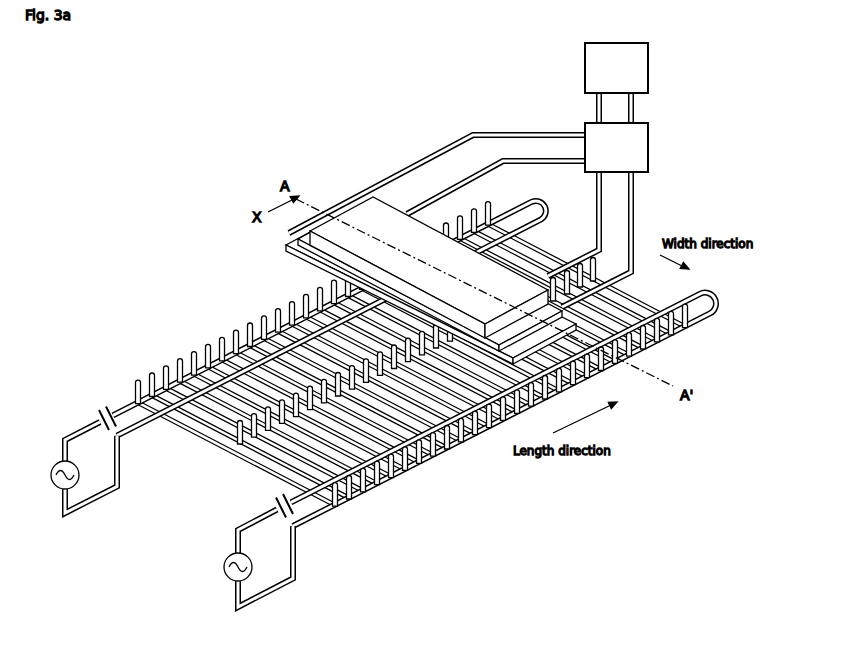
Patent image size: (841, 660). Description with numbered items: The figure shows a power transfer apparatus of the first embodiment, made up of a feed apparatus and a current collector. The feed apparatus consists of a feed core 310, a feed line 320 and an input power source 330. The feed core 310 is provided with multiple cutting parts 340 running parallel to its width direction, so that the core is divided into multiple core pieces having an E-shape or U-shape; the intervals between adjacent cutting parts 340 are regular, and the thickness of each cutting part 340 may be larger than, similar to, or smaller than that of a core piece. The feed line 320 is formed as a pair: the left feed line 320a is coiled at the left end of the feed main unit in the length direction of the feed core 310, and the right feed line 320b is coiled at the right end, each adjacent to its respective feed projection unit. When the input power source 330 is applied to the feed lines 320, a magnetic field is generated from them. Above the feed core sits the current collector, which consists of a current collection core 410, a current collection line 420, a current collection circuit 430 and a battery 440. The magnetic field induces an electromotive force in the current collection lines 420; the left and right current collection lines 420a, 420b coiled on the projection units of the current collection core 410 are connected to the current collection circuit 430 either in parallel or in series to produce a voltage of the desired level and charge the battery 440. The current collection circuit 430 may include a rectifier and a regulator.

The feed core 310 is at (236, 334).
The feed line 320 is at (168, 488).
The left feed line 320a is at (152, 420).
The right feed line 320b is at (283, 503).
The input power source 330 is at (60, 464).
The cutting part 340 is at (218, 360).
The current collection core 410 is at (388, 196).
The current collection line 420 is at (381, 284).
The left current collection line 420a is at (298, 240).
The right current collection line 420b is at (372, 262).
The current collection circuit 430 is at (650, 137).
The battery 440 is at (650, 63).